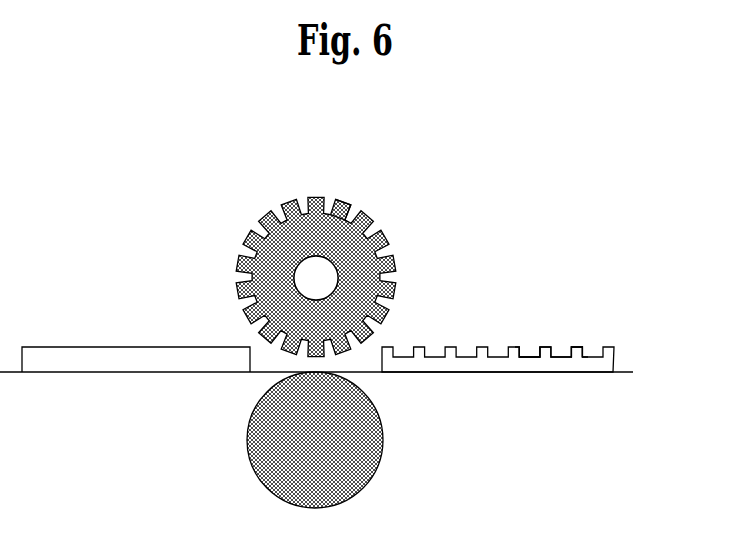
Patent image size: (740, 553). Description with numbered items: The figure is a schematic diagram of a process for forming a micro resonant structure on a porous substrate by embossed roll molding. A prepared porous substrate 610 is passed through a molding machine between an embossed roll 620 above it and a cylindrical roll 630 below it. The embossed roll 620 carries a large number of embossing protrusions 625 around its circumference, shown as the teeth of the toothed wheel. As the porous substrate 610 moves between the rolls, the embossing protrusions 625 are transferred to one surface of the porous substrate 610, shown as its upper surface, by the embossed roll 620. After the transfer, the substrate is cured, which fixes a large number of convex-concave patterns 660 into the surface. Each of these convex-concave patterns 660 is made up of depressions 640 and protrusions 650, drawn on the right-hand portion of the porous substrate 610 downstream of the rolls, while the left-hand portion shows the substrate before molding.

The porous substrate 610 is at (88, 358).
The embossed roll 620 is at (395, 262).
The embossing protrusions 625 is at (345, 202).
The cylindrical roll 630 is at (370, 443).
The depressions 640 is at (532, 355).
The protrusions 650 is at (578, 346).
The convex-concave patterns 660 is at (587, 278).